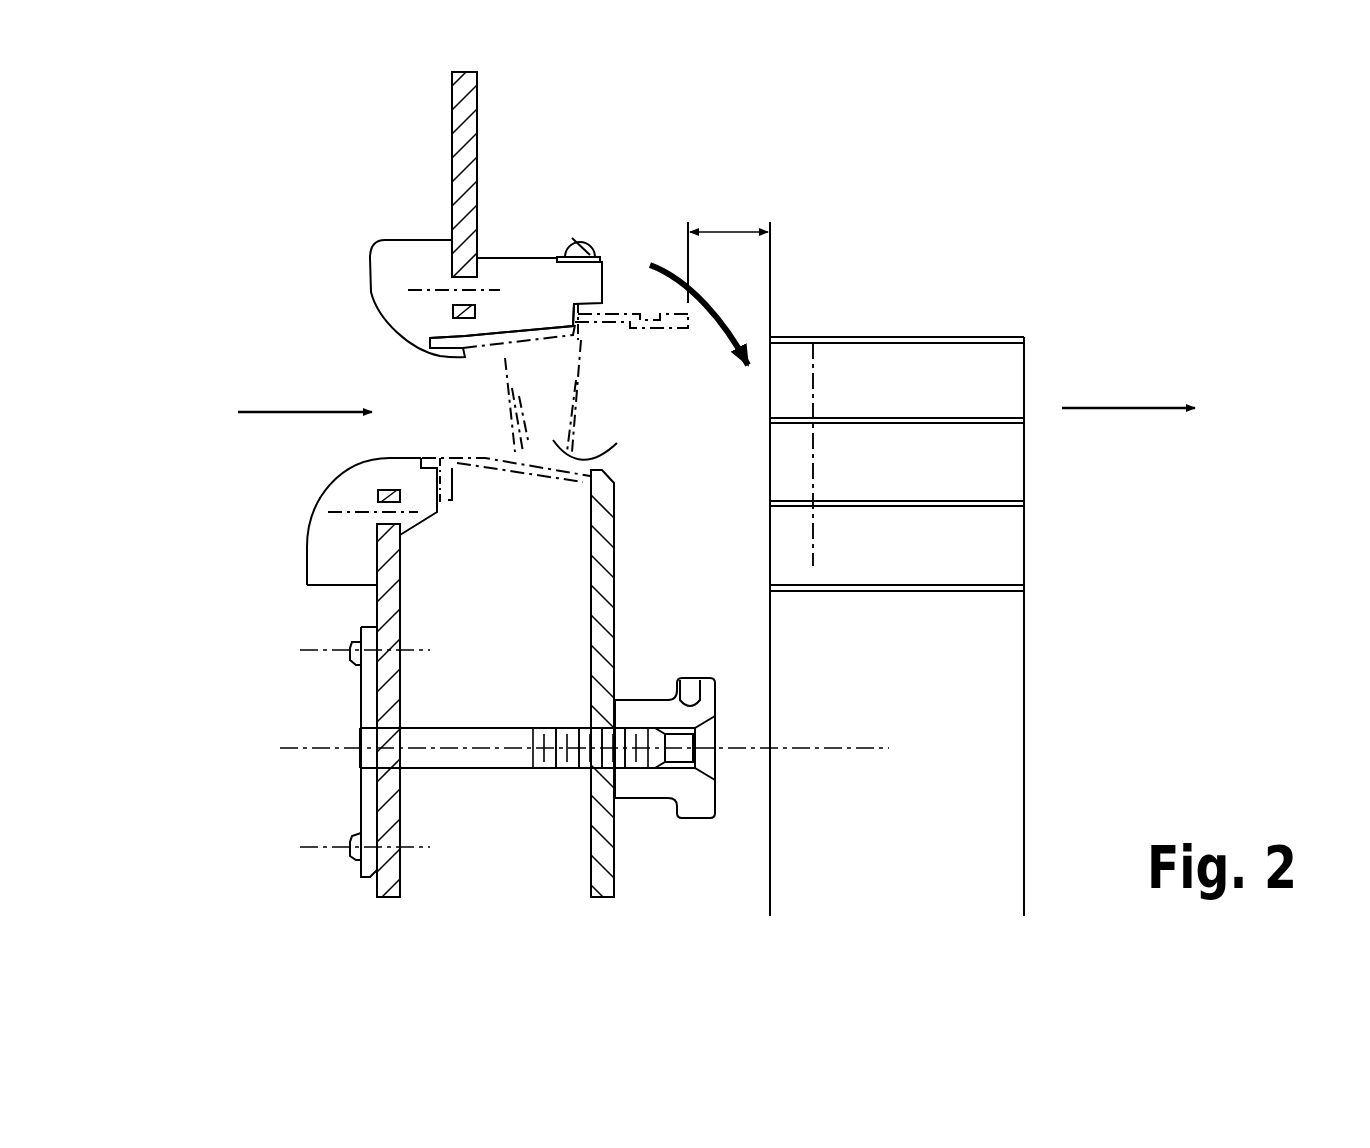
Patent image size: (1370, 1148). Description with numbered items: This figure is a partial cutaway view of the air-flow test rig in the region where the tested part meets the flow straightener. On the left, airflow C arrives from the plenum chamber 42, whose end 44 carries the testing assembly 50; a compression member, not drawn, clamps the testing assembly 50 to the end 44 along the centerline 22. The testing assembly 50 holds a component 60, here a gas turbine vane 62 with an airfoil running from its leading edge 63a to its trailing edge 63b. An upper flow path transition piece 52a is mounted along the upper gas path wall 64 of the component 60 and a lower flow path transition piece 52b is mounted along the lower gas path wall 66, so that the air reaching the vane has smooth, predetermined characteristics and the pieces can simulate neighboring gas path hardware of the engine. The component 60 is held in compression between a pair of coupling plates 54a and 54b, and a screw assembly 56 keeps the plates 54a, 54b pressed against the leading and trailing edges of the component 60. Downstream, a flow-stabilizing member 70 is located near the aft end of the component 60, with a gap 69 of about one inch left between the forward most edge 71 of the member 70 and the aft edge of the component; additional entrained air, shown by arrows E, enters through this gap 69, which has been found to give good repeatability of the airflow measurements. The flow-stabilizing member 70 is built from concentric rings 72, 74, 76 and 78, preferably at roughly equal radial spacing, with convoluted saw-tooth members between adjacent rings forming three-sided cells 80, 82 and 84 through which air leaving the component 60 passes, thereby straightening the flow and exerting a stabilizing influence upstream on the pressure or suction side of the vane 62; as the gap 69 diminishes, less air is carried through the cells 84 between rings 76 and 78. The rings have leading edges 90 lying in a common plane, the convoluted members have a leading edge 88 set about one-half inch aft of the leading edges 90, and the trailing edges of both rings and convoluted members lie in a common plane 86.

The centerline 22 is at (862, 748).
The plenum chamber 42 is at (685, 357).
The end of chamber 44 is at (477, 127).
The testing assembly 50 is at (508, 257).
The upper flow path transition piece 52a is at (372, 290).
The lower flow path transition piece 52b is at (307, 560).
The coupling plate 54a is at (402, 585).
The coupling plate 54b is at (590, 570).
The screw assembly 56 is at (693, 690).
The component 60 is at (632, 312).
The vane 62 is at (590, 455).
The leading edge 63a is at (505, 390).
The trailing edge 63b is at (592, 388).
The upper gas path wall 64 is at (487, 363).
The lower gas path wall 66 is at (483, 432).
The gap 69 is at (730, 232).
The flow-stabilizing member 70 is at (914, 328).
The forward most edge 71 is at (770, 338).
The concentric ring 72 is at (1024, 340).
The concentric ring 74 is at (1025, 420).
The concentric ring 76 is at (1025, 505).
The concentric ring 78 is at (1025, 590).
The cells 80 is at (897, 380).
The cells 82 is at (897, 462).
The cells 84 is at (897, 545).
The common plane 86 is at (1025, 380).
The leading edge of convoluted members 88 is at (813, 566).
The leading edges of rings 90 is at (772, 590).